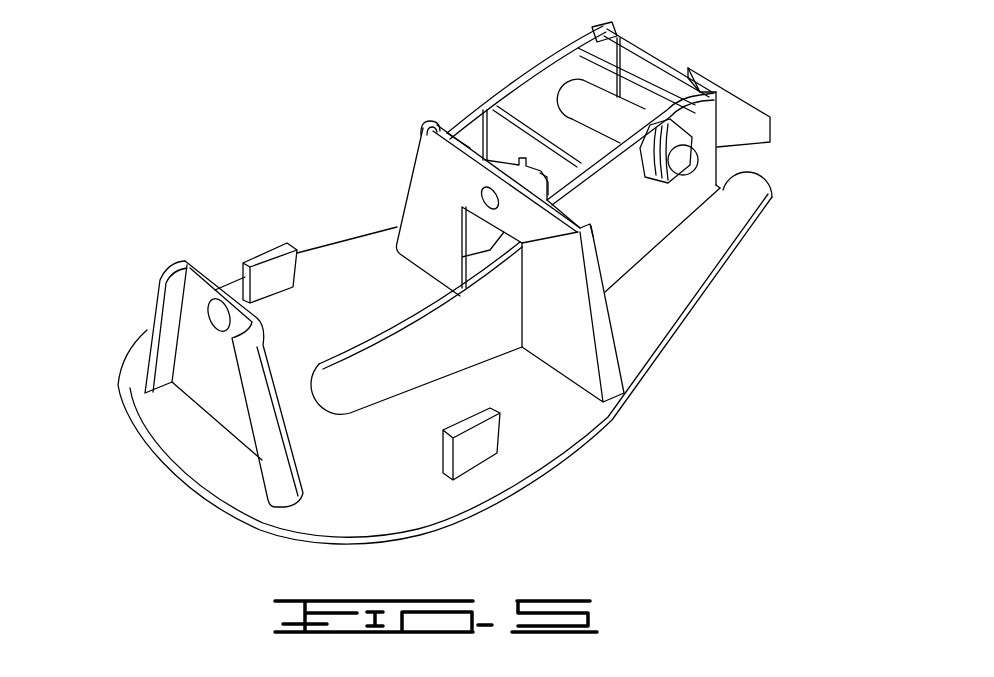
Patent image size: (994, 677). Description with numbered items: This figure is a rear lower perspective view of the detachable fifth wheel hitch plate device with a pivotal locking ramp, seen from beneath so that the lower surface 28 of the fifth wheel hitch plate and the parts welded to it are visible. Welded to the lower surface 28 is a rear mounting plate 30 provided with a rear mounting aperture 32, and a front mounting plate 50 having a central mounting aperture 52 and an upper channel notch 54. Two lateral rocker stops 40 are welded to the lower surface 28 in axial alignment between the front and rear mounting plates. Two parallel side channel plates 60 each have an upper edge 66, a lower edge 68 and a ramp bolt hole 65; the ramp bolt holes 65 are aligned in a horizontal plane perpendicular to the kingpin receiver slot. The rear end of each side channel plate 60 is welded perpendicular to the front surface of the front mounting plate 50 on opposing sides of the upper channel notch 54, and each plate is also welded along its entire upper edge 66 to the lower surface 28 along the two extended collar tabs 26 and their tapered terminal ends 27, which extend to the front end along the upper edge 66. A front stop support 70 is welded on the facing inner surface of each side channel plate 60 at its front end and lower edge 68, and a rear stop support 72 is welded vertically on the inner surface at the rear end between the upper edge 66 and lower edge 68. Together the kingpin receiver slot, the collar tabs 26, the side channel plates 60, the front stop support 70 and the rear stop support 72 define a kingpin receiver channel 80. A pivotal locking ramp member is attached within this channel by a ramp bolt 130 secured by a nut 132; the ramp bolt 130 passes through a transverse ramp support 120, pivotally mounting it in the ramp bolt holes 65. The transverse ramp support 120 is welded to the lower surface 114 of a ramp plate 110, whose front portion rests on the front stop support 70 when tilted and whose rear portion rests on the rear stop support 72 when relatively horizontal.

The extended collar tab 26 is at (643, 340).
The tapered terminal end 27 is at (753, 184).
The lower surface 28 is at (357, 483).
The rear mounting plate 30 is at (157, 278).
The rear mounting aperture 32 is at (215, 322).
The lateral rocker stop 40 is at (267, 255).
The front mounting plate 50 is at (410, 242).
The central mounting aperture 52 is at (419, 143).
The upper channel notch 54 is at (427, 370).
The side channel plate 60 is at (553, 82).
The ramp bolt hole 65 is at (492, 127).
The upper edge 66 is at (680, 220).
The lower edge 68 is at (598, 28).
The front stop support 70 is at (620, 123).
The rear stop support 72 is at (480, 117).
The kingpin receiver channel 80 is at (522, 305).
The ramp plate 110 is at (727, 153).
The lower surface 114 is at (730, 105).
The transverse ramp support 120 is at (670, 60).
The ramp bolt 130 is at (710, 187).
The nut 132 is at (683, 160).